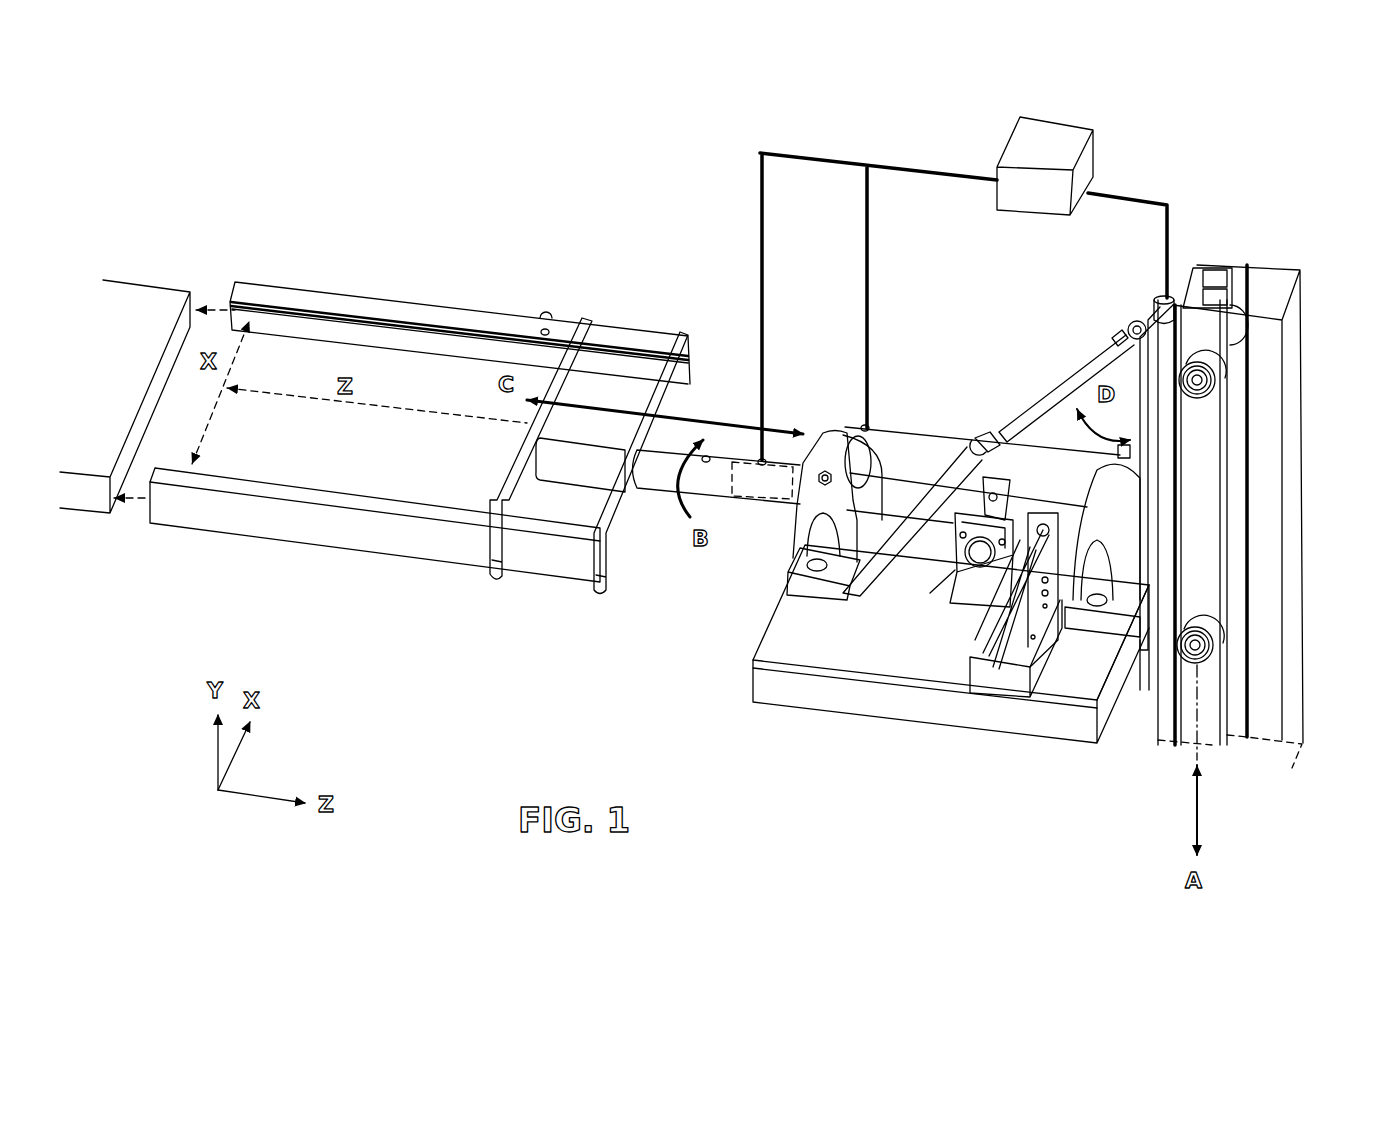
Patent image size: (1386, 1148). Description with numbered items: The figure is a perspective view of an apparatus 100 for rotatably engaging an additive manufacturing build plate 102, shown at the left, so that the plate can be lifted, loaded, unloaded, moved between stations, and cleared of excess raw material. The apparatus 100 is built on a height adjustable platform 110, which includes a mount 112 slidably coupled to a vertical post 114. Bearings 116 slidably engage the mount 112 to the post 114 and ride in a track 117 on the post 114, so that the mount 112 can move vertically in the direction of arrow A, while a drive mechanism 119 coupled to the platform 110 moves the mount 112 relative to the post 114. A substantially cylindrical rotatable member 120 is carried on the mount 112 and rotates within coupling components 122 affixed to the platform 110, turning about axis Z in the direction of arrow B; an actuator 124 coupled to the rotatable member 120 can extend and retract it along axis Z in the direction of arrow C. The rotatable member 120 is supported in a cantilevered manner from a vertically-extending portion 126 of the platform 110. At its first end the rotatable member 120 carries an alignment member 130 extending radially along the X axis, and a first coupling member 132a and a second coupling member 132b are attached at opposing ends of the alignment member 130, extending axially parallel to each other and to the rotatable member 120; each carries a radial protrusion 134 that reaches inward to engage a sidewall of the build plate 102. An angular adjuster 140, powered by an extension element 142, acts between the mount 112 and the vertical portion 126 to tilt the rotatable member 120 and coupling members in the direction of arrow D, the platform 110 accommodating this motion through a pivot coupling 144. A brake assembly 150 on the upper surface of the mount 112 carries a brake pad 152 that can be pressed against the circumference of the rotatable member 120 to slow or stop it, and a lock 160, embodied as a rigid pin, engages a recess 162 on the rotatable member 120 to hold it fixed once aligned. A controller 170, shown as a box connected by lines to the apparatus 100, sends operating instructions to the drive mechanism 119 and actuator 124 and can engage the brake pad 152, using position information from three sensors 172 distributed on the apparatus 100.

The apparatus 100 is at (737, 712).
The build plate 102 is at (82, 492).
The height adjustable platform 110 is at (910, 732).
The mount 112 is at (873, 687).
The post 114 is at (1280, 637).
The bearings 116 is at (1173, 355).
The track 117 is at (1243, 435).
The drive mechanism 119 is at (1155, 298).
The rotatable member 120 is at (653, 477).
The coupling components 122 is at (803, 530).
The actuator 124 is at (790, 440).
The vertically-extending portion 126 is at (1145, 593).
The alignment member 130 is at (527, 492).
The first coupling member 132a is at (318, 523).
The second coupling member 132b is at (400, 303).
The radial protrusion 134 is at (310, 300).
The angular adjuster 140 is at (947, 490).
The extension element 142 is at (883, 540).
The pivot coupling 144 is at (1125, 692).
The brake assembly 150 is at (1010, 680).
The brake pad 152 is at (1030, 707).
The lock 160 is at (977, 553).
The recess 162 is at (987, 488).
The controller 170 is at (1083, 167).
The sensors 172 is at (768, 410).